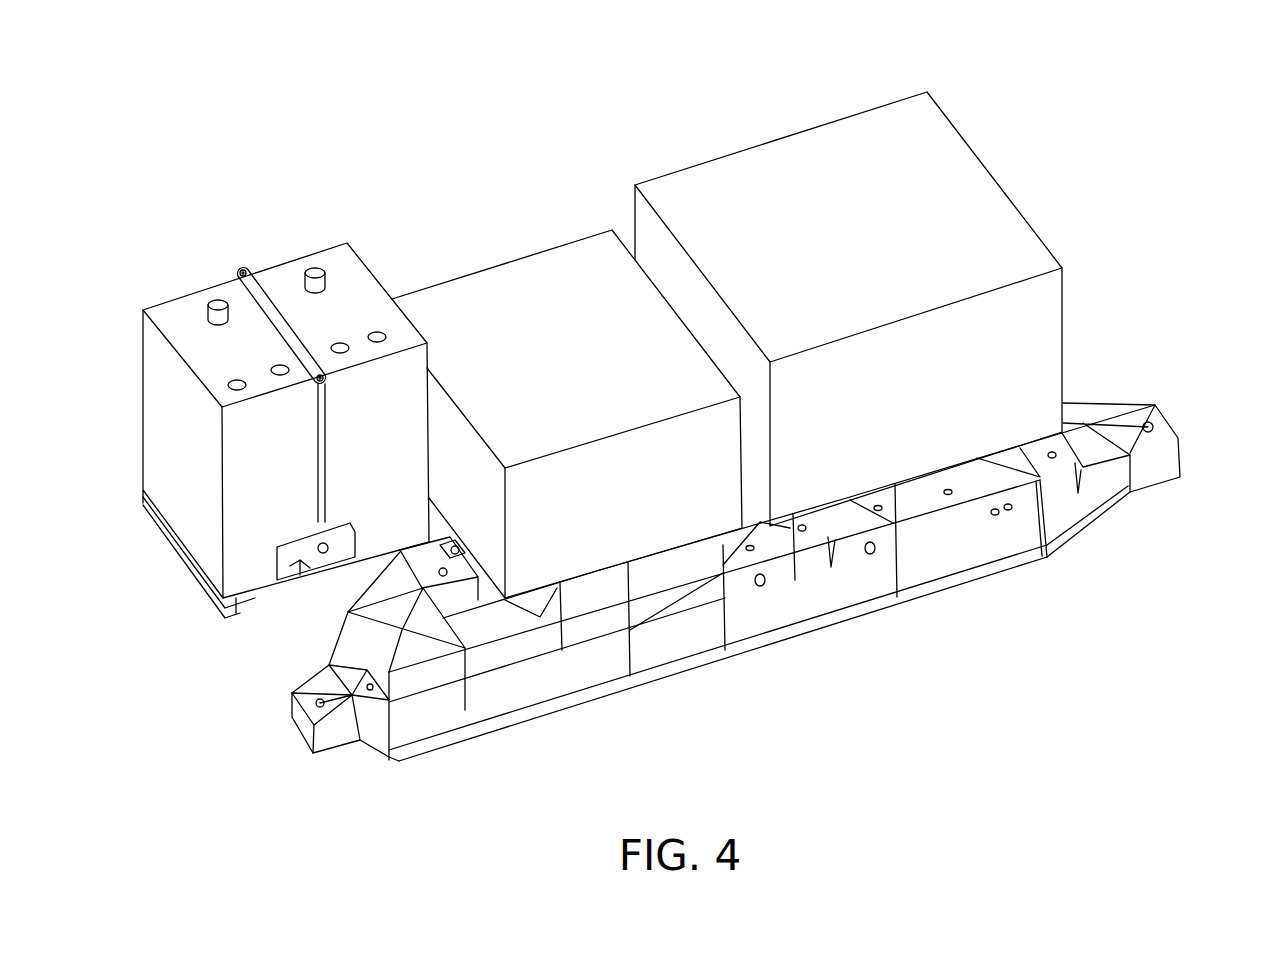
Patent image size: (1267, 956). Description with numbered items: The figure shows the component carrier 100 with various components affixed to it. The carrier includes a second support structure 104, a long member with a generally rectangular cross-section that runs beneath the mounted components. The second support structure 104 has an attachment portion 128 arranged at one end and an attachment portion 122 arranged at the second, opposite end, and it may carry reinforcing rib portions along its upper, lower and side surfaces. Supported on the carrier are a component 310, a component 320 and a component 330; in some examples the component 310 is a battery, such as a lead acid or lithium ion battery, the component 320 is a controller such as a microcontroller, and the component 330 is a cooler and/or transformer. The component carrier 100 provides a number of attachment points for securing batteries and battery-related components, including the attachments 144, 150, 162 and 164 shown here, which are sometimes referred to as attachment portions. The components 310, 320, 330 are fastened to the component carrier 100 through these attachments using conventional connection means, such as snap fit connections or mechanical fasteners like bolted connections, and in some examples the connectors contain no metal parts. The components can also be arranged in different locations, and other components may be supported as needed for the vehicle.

The component carrier 100 is at (1060, 118).
The second support structure 104 is at (950, 565).
The attachment portion 122 is at (322, 708).
The attachment portion 128 is at (1153, 428).
The attachment 144 is at (458, 556).
The attachment 150 is at (322, 553).
The attachment 162 is at (1055, 456).
The attachment 164 is at (806, 528).
The component 310 is at (284, 282).
The component 320 is at (513, 285).
The component 330 is at (803, 155).